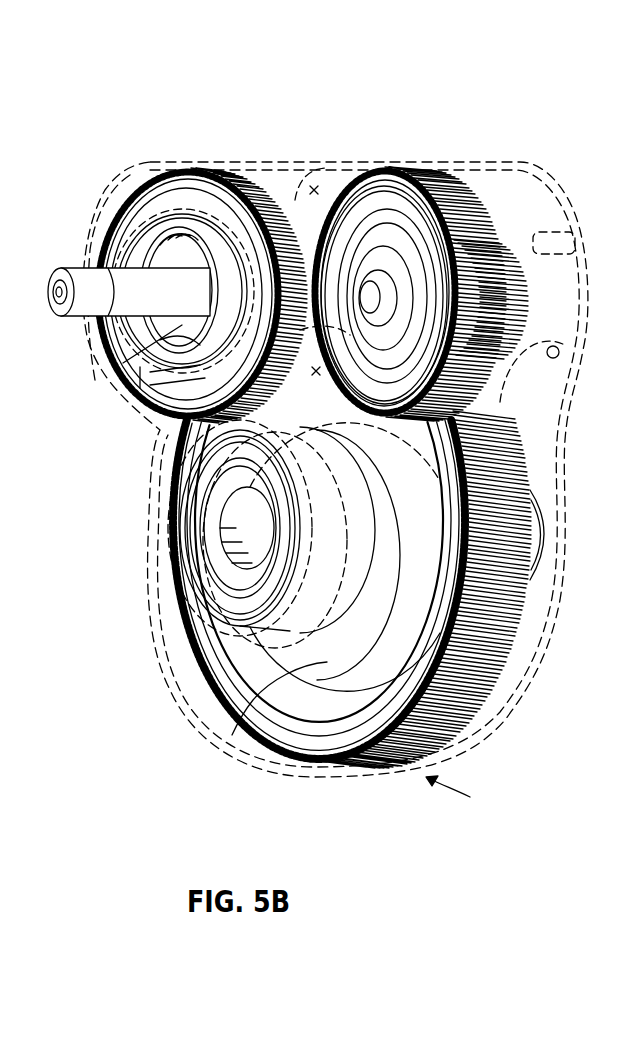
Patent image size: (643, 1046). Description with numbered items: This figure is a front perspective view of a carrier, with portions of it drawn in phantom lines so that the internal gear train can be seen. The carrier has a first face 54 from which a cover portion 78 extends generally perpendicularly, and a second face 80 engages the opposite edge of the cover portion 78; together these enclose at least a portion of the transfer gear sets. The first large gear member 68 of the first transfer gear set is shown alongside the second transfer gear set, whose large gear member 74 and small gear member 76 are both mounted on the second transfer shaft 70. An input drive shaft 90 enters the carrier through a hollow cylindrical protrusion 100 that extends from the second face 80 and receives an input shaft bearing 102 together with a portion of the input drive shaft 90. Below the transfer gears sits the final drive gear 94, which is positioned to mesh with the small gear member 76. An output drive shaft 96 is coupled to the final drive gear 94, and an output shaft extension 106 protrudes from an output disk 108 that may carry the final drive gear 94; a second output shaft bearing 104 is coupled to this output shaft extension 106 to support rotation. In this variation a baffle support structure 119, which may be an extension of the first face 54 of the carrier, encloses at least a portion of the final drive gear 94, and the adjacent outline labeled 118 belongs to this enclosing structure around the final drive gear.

The first face 54 is at (570, 403).
The first large gear member 68 is at (215, 168).
The second transfer shaft 70 is at (388, 290).
The large gear member 74 is at (483, 205).
The small gear member 76 is at (523, 310).
The cover portion 78 is at (312, 190).
The second face 80 is at (130, 193).
The input drive shaft 90 is at (88, 270).
The final drive gear 94 is at (400, 760).
The output drive shaft 96 is at (543, 543).
The hollow cylindrical protrusion 100 is at (130, 387).
The input shaft bearing 102 is at (123, 363).
The second output shaft bearing 104 is at (207, 560).
The output shaft extension 106 is at (217, 580).
The output disk 108 is at (327, 662).
The housing cover 118 is at (502, 690).
The baffle support structure 119 is at (467, 796).